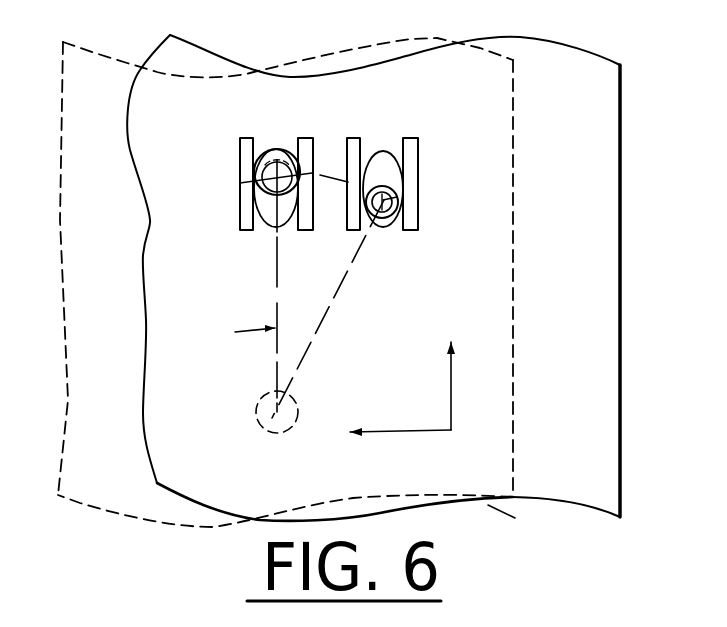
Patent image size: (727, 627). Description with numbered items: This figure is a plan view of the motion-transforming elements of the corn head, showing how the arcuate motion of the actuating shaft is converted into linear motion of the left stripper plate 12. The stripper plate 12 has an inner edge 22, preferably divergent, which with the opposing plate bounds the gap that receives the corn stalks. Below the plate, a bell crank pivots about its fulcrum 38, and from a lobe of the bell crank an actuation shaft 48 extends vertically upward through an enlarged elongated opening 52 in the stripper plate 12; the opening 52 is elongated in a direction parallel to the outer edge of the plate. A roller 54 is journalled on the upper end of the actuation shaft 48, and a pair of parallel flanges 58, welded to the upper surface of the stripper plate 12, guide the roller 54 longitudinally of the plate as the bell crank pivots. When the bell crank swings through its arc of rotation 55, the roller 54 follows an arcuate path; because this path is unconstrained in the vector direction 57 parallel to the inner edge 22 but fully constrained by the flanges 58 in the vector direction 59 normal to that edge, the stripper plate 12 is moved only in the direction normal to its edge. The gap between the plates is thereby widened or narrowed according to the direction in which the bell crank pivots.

The left stripper plate 12 is at (581, 389).
The left inner edge 22 is at (515, 260).
The fulcrum 38 is at (262, 423).
The actuation shaft 48 is at (240, 183).
The enlarged elongated opening 52 is at (244, 268).
The roller 54 is at (268, 150).
The arc of rotation 55 is at (318, 340).
The vector direction parallel to the inner edge 57 is at (454, 371).
The parallel flanges 58 is at (239, 136).
The vector direction normal to the edge 59 is at (381, 435).